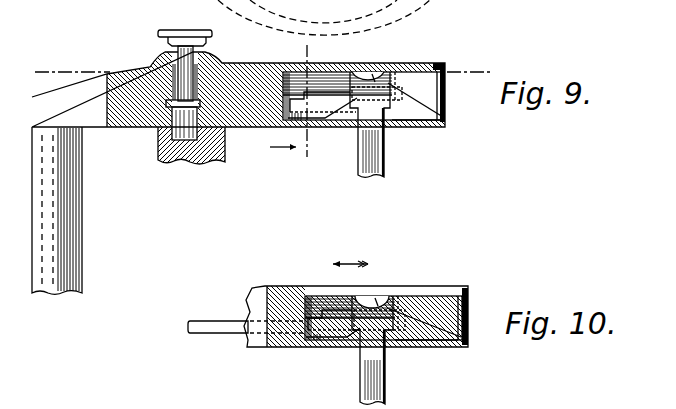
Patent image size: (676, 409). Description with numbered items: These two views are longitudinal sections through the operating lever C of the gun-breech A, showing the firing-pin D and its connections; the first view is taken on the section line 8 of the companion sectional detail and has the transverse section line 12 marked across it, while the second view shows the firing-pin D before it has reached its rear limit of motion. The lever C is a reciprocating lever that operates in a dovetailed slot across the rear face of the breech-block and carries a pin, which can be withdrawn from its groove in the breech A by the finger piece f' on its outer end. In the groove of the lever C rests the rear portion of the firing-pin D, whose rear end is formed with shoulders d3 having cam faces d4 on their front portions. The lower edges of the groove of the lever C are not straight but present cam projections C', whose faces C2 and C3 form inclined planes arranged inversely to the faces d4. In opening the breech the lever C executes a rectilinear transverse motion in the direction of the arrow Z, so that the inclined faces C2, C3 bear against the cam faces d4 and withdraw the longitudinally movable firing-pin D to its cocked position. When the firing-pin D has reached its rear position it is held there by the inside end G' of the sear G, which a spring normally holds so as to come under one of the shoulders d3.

In FIG. 9, the operating lever C is at (274, 173).
In FIG. 10, the operating lever C is at (366, 305).
In FIG. 9, the section line 8— 8 is at (263, 65).
In FIG. 9, the finger piece f' is at (185, 23).
In FIG. 9, the bolt f is at (162, 106).
In FIG. 9, the gun-breech A is at (182, 168).
In FIG. 9, the section line 12— 12 is at (299, 101).
In FIG. 9, the shoulder d3 is at (364, 77).
In FIG. 10, the shoulder d3 is at (368, 308).
In FIG. 9, the inside end of sear G' is at (320, 102).
In FIG. 9, the inclined face of cam projection C3 is at (322, 105).
In FIG. 10, the inclined face of cam projection C3 is at (333, 323).
In FIG. 9, the firing-pin D is at (378, 124).
In FIG. 10, the firing-pin D is at (378, 350).
In FIG. 9, the cam face d4 is at (384, 78).
In FIG. 10, the cam face d4 is at (405, 309).
In FIG. 9, the inclined face of cam projection C2 is at (416, 96).
In FIG. 10, the inclined face of cam projection C2 is at (424, 322).
In FIG. 9, the cam projection C' is at (417, 112).
In FIG. 10, the cam projection C' is at (426, 334).
In FIG. 10, the sear G is at (246, 340).
In FIG. 10, the direction arrow Z is at (350, 255).